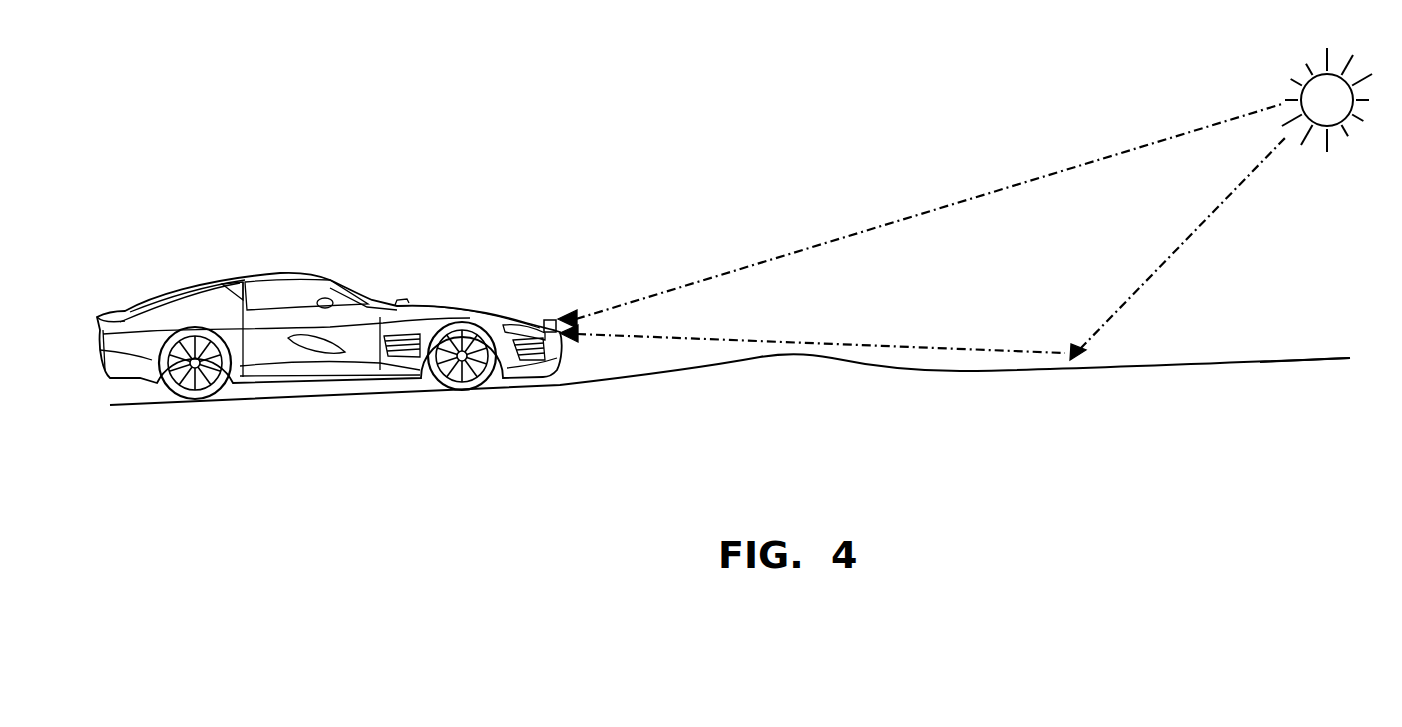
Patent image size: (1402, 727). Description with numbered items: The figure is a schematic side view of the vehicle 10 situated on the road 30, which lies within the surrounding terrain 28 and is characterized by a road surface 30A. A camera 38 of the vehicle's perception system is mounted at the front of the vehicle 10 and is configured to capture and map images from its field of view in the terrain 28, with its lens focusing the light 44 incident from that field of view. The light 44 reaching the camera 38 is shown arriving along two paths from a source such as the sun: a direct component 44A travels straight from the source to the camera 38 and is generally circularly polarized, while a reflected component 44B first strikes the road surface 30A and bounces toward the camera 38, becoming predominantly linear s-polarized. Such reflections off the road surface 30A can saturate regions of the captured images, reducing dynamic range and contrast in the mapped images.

The vehicle 10 is at (258, 268).
The terrain 28 is at (1352, 252).
The road 30 is at (1188, 364).
The road surface 30A is at (1290, 359).
The camera 38 is at (550, 320).
The light 44 is at (575, 293).
The direct light component 44A is at (930, 205).
The reflected light component 44B is at (870, 340).